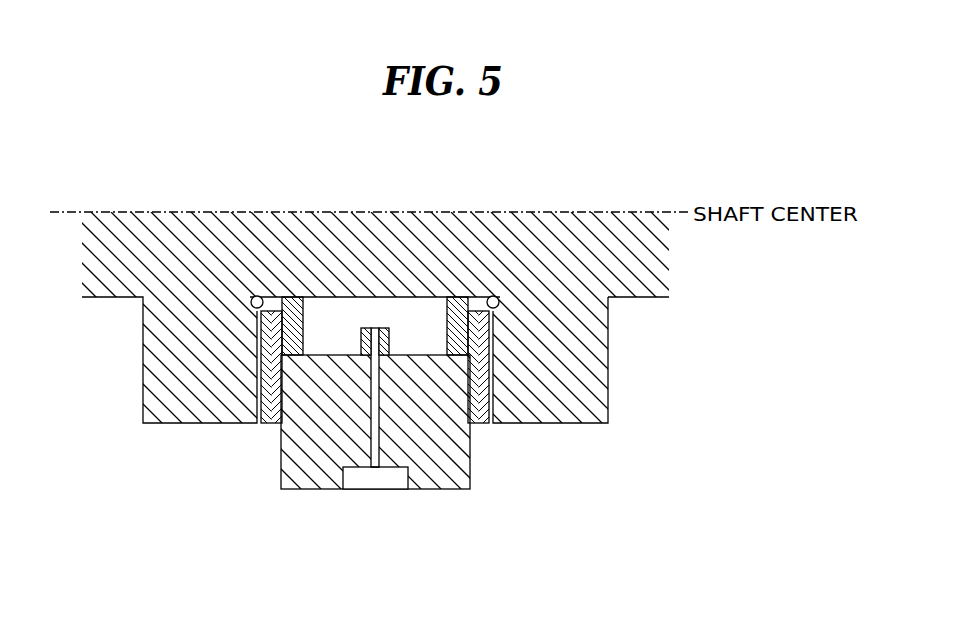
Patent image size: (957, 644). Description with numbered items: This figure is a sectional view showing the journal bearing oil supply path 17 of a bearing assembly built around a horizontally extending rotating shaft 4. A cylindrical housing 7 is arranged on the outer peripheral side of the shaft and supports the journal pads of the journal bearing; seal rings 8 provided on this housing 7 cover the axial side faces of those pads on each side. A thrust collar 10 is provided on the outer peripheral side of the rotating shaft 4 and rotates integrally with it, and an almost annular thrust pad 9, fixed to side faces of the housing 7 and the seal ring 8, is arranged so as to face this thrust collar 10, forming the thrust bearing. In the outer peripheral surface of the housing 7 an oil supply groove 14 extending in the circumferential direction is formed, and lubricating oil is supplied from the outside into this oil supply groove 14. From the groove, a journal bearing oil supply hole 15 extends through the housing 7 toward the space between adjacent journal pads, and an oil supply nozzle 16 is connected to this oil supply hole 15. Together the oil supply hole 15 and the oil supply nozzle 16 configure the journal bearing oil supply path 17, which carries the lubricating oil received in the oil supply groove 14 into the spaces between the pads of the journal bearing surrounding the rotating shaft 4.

The rotating shaft 4 is at (645, 297).
The thrust collar 10 is at (570, 423).
The thrust pad 9 is at (272, 315).
The seal ring 8 is at (292, 307).
The housing 7 is at (440, 482).
The oil supply groove 14 is at (362, 482).
The journal bearing oil supply hole 15 is at (372, 467).
The oil supply nozzle 16 is at (383, 332).
The journal bearing oil supply path 17 is at (368, 313).